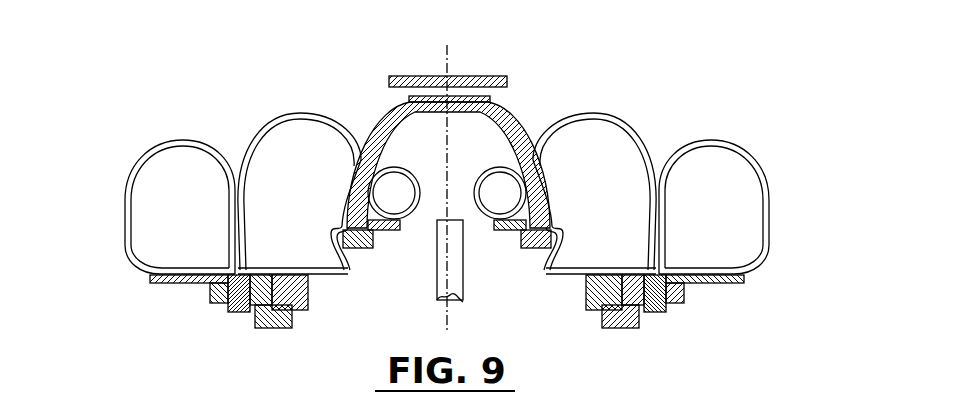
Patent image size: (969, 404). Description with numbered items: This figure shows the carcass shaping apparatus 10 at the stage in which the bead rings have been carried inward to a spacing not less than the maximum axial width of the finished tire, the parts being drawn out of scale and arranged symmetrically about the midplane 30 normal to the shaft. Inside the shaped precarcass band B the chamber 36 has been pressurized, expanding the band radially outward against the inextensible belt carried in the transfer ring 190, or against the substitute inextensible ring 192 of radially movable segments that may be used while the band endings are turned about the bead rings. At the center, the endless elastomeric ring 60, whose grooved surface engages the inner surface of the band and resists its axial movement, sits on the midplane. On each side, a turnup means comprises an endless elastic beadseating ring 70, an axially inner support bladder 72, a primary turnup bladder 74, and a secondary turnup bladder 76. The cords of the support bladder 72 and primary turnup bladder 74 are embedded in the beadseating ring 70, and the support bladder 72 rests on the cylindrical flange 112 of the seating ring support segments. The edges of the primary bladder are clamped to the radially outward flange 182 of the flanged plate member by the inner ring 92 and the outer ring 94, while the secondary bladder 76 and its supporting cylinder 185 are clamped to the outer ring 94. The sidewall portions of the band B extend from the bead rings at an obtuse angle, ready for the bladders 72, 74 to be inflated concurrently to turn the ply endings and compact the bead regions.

The carcass shaping apparatus 10 is at (445, 211).
The midplane 30 is at (448, 268).
The chamber 36 is at (494, 164).
The endless elastomeric ring 60 is at (440, 283).
The endless elastic beadseating ring 70 is at (357, 248).
The axially inner support bladder 72 is at (477, 197).
The primary turnup bladder 74 is at (270, 118).
The secondary turnup bladder 76 is at (152, 150).
The inner ring 92 is at (297, 308).
The outer ring 94 is at (235, 310).
The cylindrical flange 112 is at (386, 232).
The radially outward flange 182 is at (273, 313).
The supporting cylinder 185 is at (187, 282).
The transfer ring 190 is at (500, 82).
The inextensible ring 192 is at (410, 99).
The precarcass band B is at (527, 138).